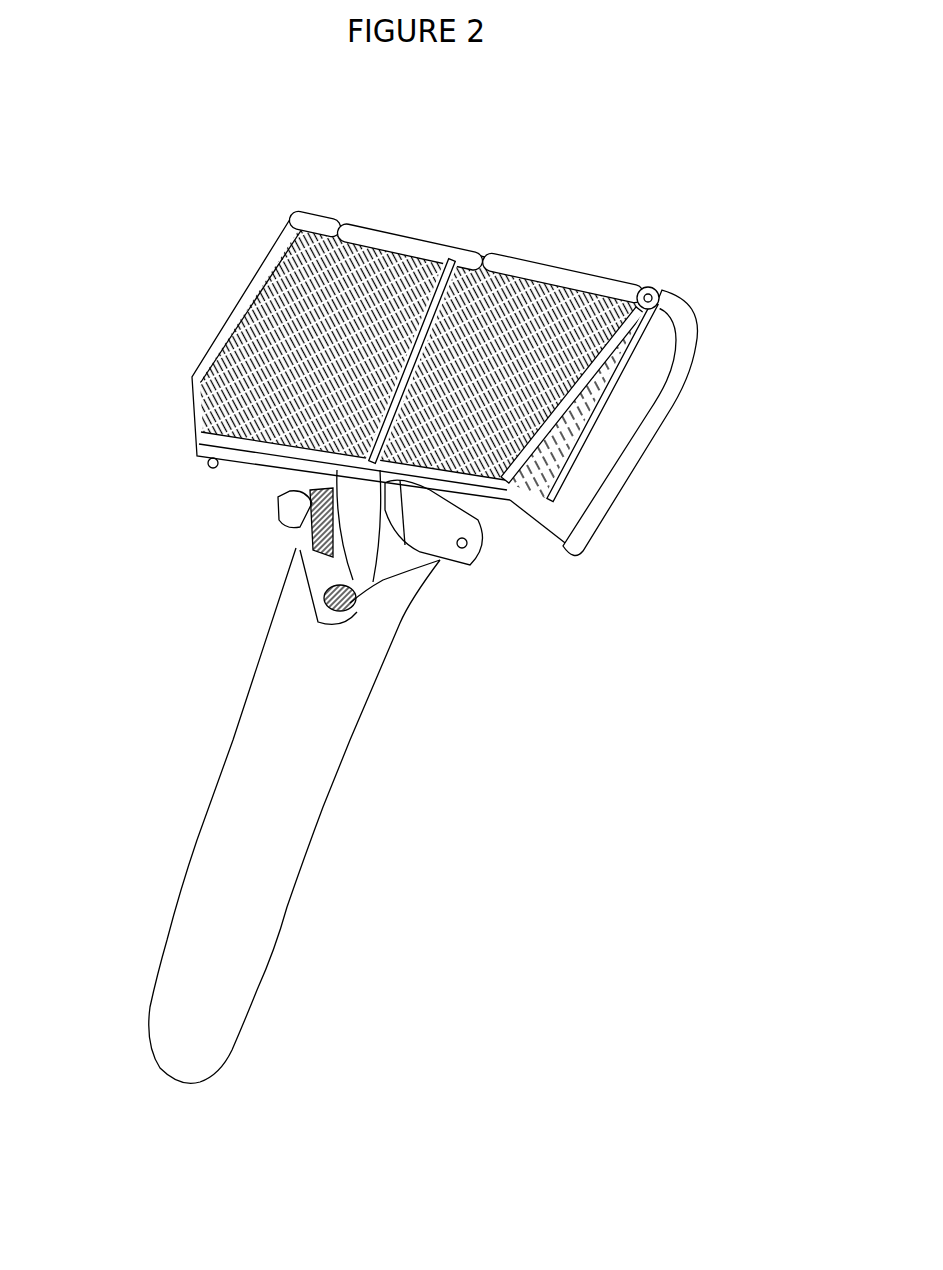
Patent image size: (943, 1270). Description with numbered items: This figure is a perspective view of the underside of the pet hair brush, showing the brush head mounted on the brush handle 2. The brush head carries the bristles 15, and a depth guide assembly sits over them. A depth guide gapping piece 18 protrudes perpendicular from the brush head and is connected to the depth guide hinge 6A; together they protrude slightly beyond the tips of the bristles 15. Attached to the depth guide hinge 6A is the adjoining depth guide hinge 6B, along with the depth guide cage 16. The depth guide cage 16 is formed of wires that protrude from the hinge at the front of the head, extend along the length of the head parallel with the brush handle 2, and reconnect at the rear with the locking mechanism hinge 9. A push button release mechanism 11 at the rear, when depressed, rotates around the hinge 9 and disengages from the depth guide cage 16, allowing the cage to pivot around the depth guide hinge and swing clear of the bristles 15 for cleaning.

The brush handle 2 is at (325, 802).
The depth guide hinge 6A is at (543, 265).
The adjoining depth guide hinge 6B is at (636, 285).
The locking mechanism hinge 9 is at (278, 496).
The push button release mechanism 11 is at (322, 592).
The bristles 15 is at (593, 403).
The depth guide cage 16 is at (186, 299).
The depth guide gapping piece 18 is at (701, 318).